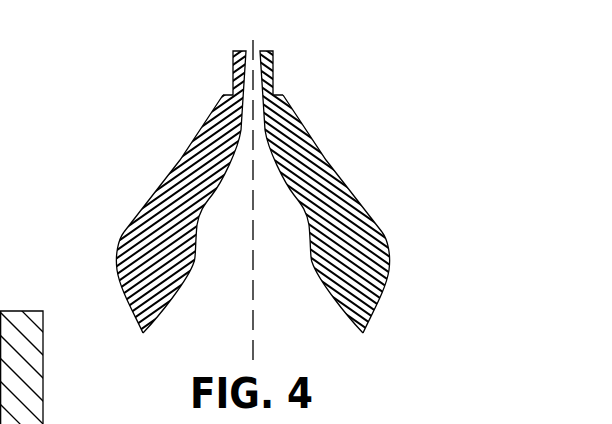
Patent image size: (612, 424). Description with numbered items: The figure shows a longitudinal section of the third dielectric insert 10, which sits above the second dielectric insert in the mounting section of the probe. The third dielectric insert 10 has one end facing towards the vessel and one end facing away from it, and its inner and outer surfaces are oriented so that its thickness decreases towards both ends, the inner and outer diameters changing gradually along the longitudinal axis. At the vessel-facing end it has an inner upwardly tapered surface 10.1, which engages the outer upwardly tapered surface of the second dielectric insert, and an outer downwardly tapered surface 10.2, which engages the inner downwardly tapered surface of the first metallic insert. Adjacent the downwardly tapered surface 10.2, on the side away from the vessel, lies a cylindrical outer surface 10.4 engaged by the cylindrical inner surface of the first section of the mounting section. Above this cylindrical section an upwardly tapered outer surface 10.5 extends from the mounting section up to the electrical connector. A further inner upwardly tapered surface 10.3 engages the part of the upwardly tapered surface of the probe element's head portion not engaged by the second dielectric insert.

The third dielectric insert 10 is at (105, 103).
The inner upwardly tapered surface 10.1 is at (178, 285).
The outer downwardly tapered surface 10.2 is at (126, 294).
The inner upwardly tapered surface 10.3 is at (229, 131).
The cylindrical outer surface 10.4 is at (390, 245).
The upwardly tapered outer surface 10.5 is at (311, 144).